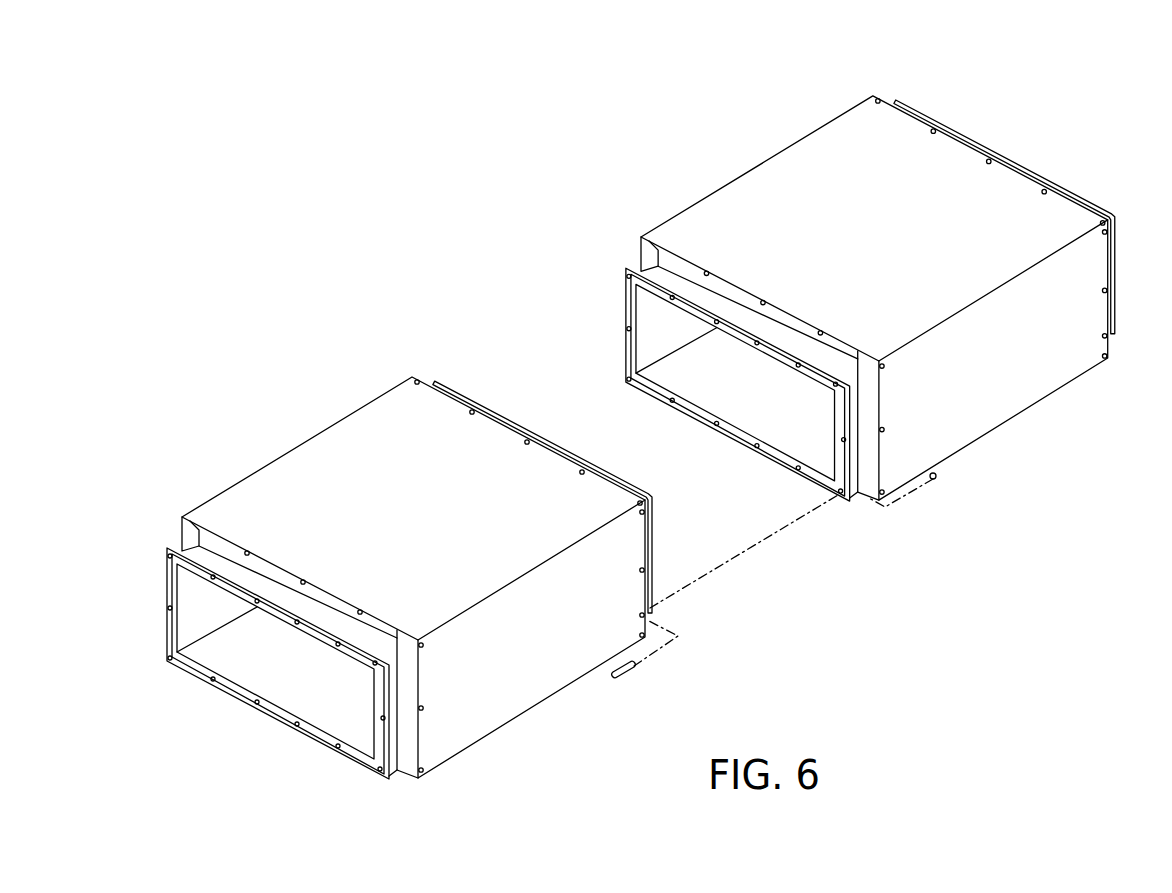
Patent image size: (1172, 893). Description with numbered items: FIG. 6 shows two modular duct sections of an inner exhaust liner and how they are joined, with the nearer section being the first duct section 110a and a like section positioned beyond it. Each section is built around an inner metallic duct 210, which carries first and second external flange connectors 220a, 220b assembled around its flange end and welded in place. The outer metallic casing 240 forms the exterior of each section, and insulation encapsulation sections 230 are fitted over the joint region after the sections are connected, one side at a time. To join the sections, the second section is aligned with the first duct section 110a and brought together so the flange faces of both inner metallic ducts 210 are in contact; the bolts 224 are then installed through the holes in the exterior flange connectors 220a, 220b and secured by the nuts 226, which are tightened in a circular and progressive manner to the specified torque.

The first duct section 110a is at (653, 454).
The inner metallic duct 210 is at (276, 682).
The first external flange connector 220a is at (320, 745).
The second external flange connector 220b is at (651, 524).
The bolt 224 is at (634, 674).
The nut 226 is at (937, 482).
The insulation encapsulation section 230 is at (410, 694).
The outer metallic casing 240 is at (446, 535).